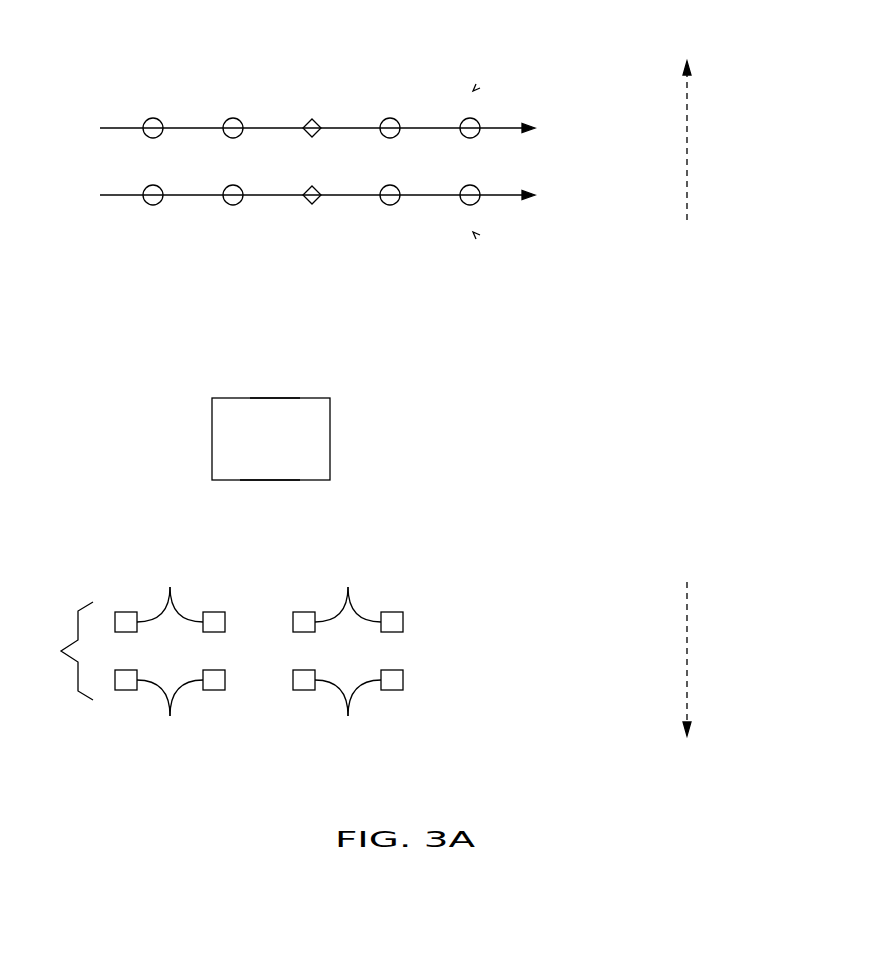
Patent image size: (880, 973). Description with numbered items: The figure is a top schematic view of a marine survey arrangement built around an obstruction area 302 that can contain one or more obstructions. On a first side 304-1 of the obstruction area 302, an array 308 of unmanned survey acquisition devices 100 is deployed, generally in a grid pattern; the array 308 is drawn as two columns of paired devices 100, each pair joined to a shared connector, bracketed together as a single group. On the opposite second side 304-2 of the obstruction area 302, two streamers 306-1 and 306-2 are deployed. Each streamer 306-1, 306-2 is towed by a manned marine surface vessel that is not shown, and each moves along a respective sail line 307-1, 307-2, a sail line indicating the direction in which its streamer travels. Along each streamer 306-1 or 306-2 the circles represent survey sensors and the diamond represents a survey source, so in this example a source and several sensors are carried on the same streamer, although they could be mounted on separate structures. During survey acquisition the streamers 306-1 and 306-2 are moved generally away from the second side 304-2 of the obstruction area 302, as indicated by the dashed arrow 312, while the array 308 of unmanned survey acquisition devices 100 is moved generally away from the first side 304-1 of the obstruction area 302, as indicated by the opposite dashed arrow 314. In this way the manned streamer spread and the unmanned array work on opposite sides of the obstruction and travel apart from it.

The streamer 306-1 is at (474, 89).
The streamer 306-2 is at (474, 234).
The sail line 307-1 is at (494, 127).
The sail line 307-2 is at (494, 197).
The arrow 312 is at (687, 146).
The arrow 314 is at (687, 650).
The obstruction area 302 is at (309, 438).
The first side of the obstruction area 304-1 is at (268, 480).
The second side of the obstruction area 304-2 is at (270, 398).
The array of unmanned survey acquisition devices 308 is at (207, 654).
The unmanned survey acquisition device 100 is at (259, 654).